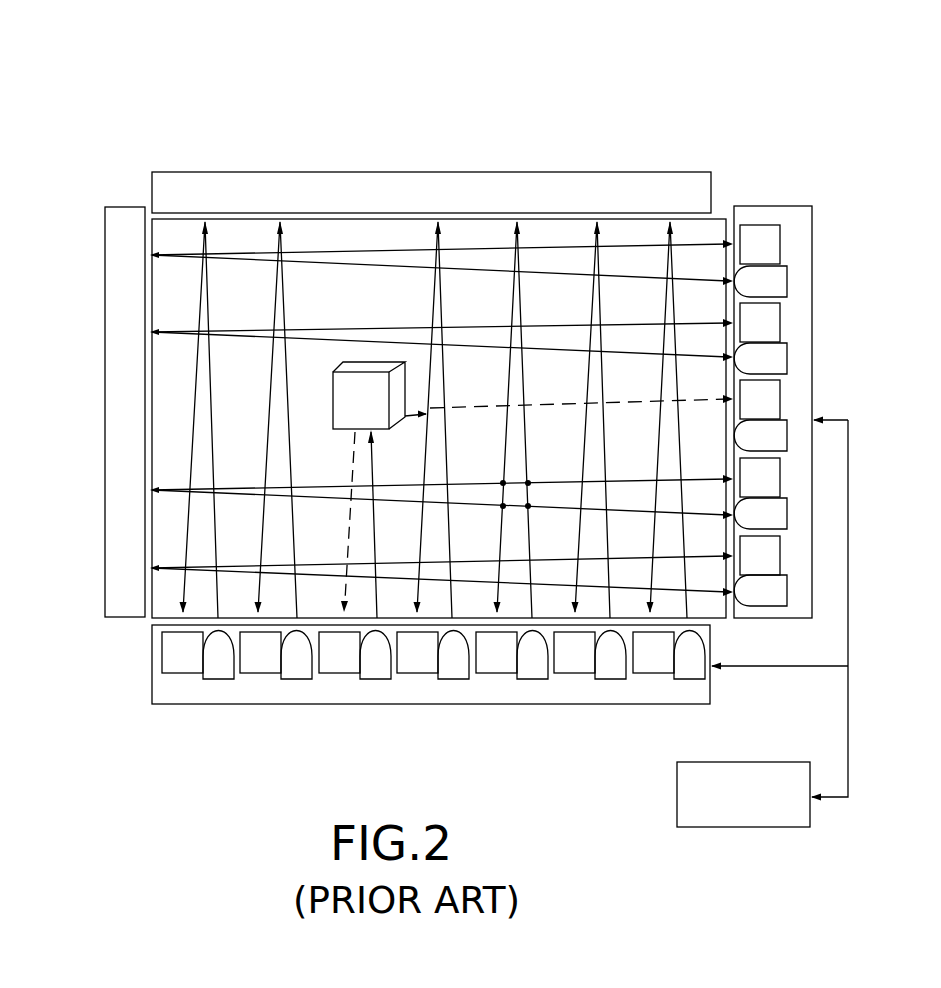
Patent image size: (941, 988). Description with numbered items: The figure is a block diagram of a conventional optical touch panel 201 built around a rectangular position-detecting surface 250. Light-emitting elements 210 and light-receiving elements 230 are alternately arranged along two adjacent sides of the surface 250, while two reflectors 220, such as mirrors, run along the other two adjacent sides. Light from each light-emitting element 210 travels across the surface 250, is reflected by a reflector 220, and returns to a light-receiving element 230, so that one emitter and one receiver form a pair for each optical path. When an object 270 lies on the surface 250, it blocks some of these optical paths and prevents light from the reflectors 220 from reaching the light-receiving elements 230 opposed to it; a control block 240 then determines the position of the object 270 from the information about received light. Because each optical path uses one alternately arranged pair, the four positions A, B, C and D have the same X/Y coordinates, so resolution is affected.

The optical touch panel 201 is at (485, 444).
The light-emitting element 210 is at (787, 279).
The reflector 220 is at (598, 172).
The light-receiving element 230 is at (780, 245).
The control block 240 is at (677, 808).
The rectangular position-detecting surface 250 is at (148, 617).
The object 270 is at (332, 408).